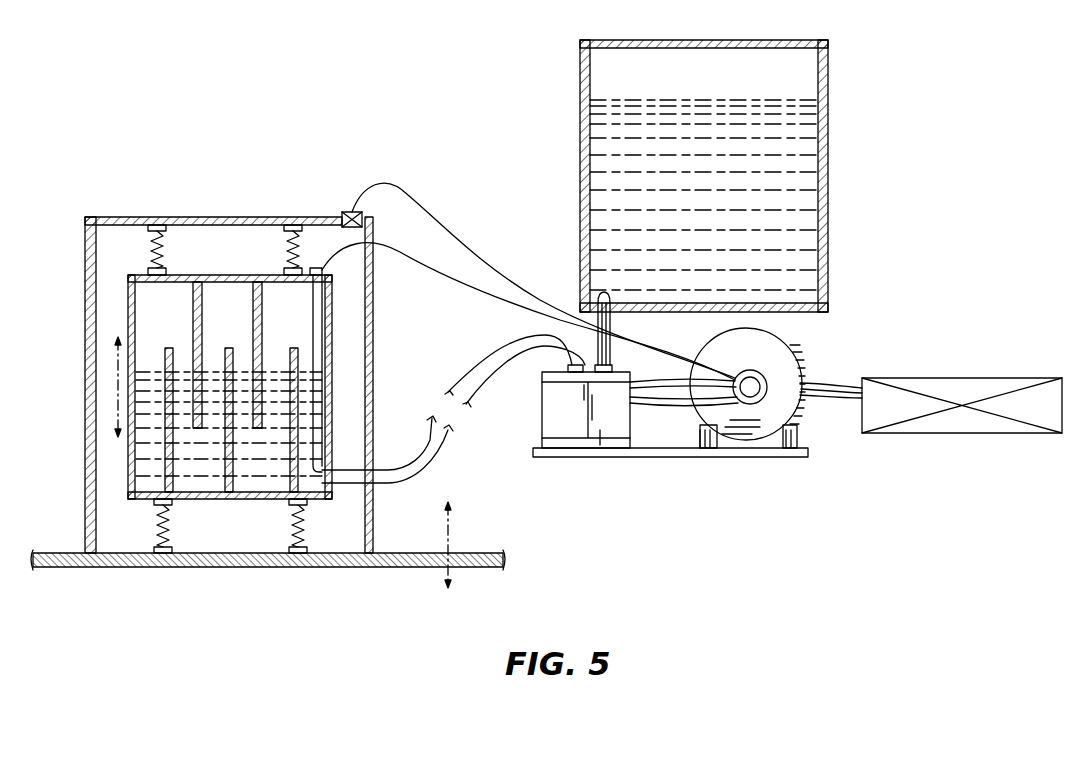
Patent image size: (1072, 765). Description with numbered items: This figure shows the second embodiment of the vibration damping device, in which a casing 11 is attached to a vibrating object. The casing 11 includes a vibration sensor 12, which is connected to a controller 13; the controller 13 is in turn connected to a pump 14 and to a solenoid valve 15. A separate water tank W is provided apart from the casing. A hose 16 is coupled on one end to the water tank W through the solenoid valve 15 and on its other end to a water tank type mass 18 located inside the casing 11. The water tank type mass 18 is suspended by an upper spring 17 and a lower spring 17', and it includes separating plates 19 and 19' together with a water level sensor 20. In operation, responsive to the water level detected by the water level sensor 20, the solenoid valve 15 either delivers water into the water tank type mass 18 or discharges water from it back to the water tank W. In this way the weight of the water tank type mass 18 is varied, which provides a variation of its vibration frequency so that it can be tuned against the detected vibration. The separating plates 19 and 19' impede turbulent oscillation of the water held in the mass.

The casing 11 is at (95, 217).
The vibration sensor 12 is at (351, 212).
The controller 13 is at (962, 378).
The pump 14 is at (750, 430).
The solenoid valve 15 is at (577, 428).
The hose 16 is at (466, 371).
The upper spring 17 is at (215, 221).
The lower spring 17' is at (268, 585).
The water tank type mass 18 is at (128, 303).
The separating plate 19 is at (227, 335).
The separating plate 19' is at (205, 449).
The water level sensor 20 is at (325, 318).
The water tank W is at (800, 166).